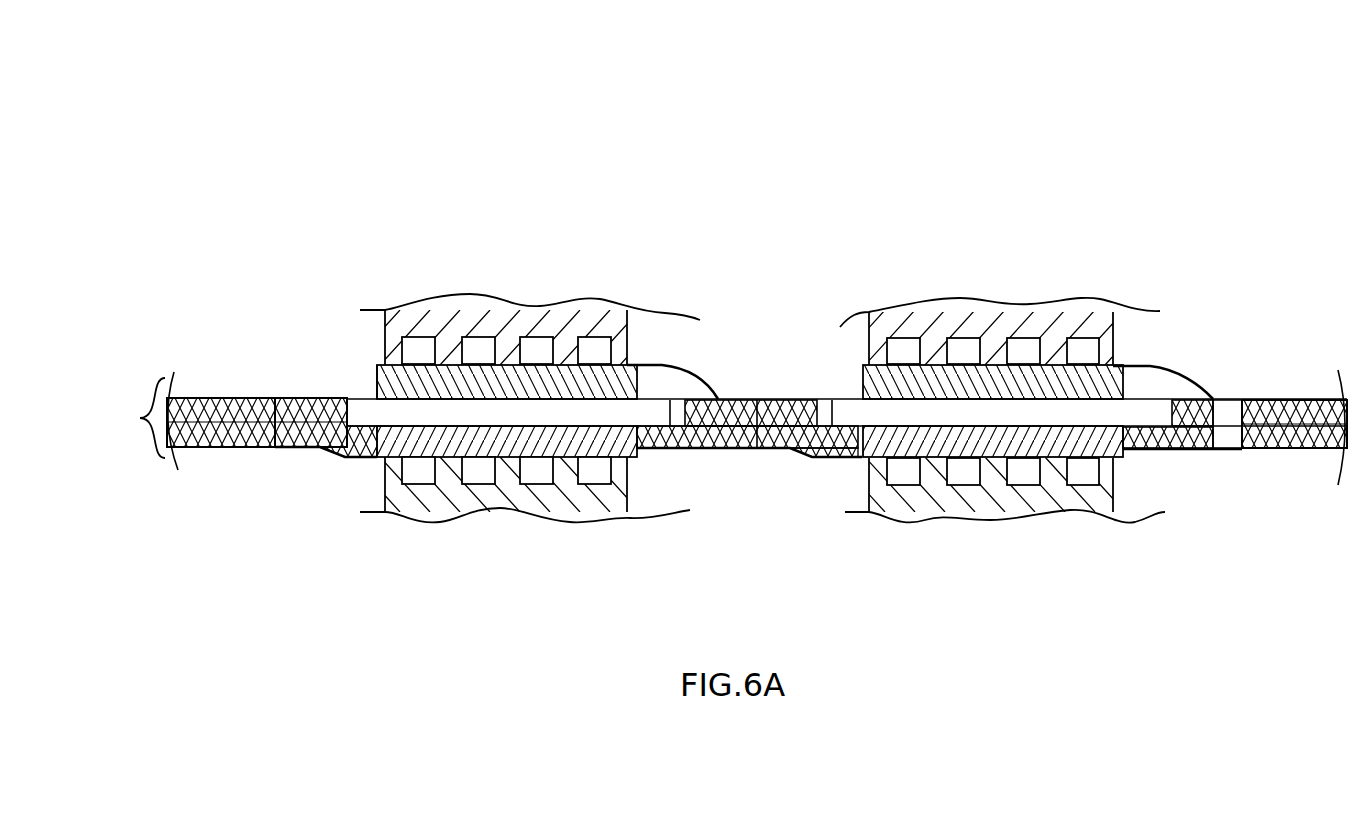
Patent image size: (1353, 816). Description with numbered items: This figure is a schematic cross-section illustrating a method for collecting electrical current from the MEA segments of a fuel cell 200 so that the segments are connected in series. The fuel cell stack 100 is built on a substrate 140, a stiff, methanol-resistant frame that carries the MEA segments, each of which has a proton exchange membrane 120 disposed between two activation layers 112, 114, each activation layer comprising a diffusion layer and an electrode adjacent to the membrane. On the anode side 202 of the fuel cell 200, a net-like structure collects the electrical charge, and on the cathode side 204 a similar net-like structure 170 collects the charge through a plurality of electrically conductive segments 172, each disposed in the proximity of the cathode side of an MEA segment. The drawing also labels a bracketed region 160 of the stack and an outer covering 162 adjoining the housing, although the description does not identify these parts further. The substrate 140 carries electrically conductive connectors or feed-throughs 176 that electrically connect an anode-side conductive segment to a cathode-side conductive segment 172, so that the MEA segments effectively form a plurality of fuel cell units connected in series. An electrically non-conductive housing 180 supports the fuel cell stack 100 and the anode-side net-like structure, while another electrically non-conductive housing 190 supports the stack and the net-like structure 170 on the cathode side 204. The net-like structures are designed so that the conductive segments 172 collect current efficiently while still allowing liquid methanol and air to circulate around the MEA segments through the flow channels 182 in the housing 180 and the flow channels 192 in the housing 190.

The fuel cell stack 100 is at (140, 418).
The activation layer 112 is at (550, 382).
The activation layer 114 is at (893, 490).
The proton exchange membrane 120 is at (578, 412).
The substrate 140 is at (213, 445).
The inner braid section 160 is at (855, 357).
The outer sleeve 162 is at (670, 367).
The net-like structure 170 is at (787, 460).
The electrically conductive segment 172 is at (343, 459).
The electrically conductive connector or feed-through 176 is at (272, 396).
The electrically non-conductive housing 180 is at (505, 320).
The flow channel 182 is at (482, 345).
The electrically non-conductive housing 190 is at (505, 504).
The flow channel 192 is at (600, 473).
The fuel cell 200 is at (780, 175).
The anode side 202 is at (264, 258).
The cathode side 204 is at (264, 651).